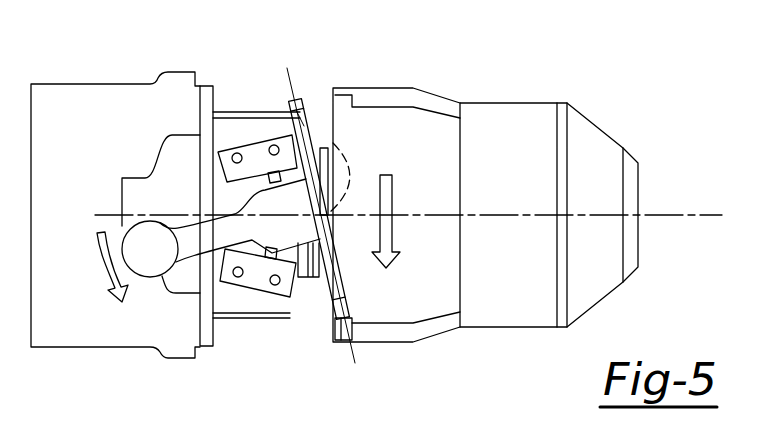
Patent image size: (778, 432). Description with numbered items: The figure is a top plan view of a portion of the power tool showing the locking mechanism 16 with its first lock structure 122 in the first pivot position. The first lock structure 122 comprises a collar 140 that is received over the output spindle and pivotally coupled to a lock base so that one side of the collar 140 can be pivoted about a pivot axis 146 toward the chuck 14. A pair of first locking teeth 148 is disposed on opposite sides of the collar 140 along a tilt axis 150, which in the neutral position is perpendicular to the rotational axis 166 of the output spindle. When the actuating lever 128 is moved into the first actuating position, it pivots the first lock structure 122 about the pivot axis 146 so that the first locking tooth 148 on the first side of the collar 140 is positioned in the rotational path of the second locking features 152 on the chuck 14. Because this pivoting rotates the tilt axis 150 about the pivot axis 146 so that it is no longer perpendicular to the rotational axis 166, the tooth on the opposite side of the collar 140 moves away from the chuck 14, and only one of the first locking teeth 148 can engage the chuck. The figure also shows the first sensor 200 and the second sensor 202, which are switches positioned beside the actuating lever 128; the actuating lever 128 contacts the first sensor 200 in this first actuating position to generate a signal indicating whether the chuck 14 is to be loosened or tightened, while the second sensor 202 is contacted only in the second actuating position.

The chuck 14 is at (543, 120).
The locking mechanism 16 is at (233, 92).
The first lock structure 122 is at (302, 116).
The actuating lever 128 is at (143, 265).
The collar 140 is at (338, 283).
The pivot axis 146 is at (350, 177).
The first locking teeth 148 is at (288, 104).
The tilt axis 150 is at (336, 150).
The second locking features 152 is at (352, 318).
The rotational axis 166 is at (667, 213).
The first sensor 200 is at (255, 287).
The second sensor 202 is at (230, 174).